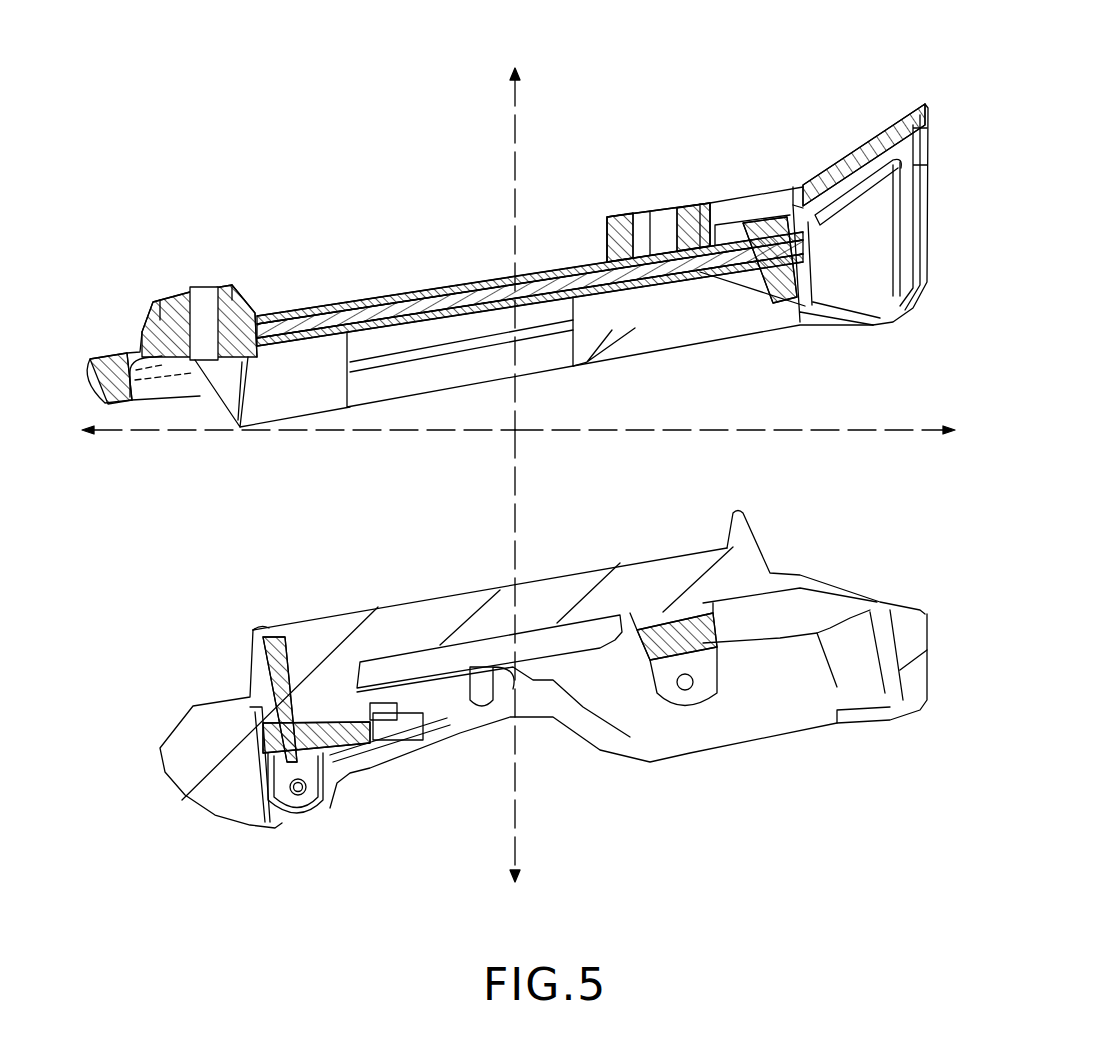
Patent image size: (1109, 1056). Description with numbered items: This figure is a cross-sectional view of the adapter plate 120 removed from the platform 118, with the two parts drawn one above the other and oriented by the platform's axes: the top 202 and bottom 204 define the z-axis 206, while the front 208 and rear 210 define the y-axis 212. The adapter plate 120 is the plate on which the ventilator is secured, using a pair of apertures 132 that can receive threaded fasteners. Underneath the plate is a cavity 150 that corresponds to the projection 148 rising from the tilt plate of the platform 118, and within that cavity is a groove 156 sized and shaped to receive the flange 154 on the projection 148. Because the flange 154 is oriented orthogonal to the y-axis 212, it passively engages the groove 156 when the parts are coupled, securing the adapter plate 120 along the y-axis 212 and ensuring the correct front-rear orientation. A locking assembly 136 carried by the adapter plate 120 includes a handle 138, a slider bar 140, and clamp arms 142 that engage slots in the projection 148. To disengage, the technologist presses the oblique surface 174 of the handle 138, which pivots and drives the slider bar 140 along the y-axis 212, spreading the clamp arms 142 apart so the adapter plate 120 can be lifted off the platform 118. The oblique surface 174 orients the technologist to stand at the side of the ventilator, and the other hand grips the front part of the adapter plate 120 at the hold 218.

The platform 118 is at (180, 773).
The adapter plate 120 is at (143, 329).
The apertures 132 is at (200, 290).
The locking assembly 136 is at (600, 312).
The handle 138 is at (896, 211).
The slider bar 140 is at (385, 318).
The clamp arms 142 is at (540, 340).
The projection 148 is at (378, 610).
The cavity 150 is at (285, 380).
The flange 154 is at (750, 523).
The groove 156 is at (742, 252).
The oblique surface 174 is at (860, 224).
The top 202 is at (564, 93).
The bottom 204 is at (644, 834).
The z-axis 206 is at (518, 825).
The front 208 is at (205, 625).
The rear 210 is at (884, 366).
The y-axis 212 is at (152, 432).
The hold 218 is at (118, 391).